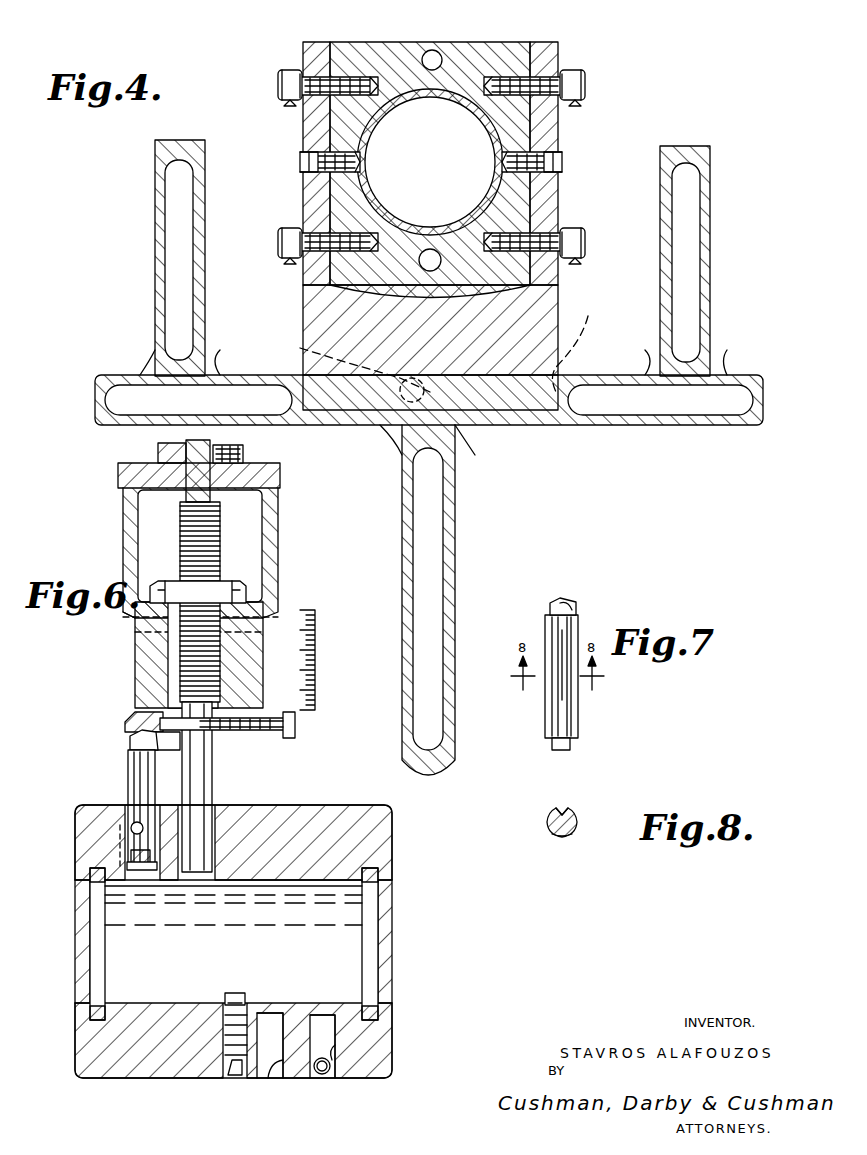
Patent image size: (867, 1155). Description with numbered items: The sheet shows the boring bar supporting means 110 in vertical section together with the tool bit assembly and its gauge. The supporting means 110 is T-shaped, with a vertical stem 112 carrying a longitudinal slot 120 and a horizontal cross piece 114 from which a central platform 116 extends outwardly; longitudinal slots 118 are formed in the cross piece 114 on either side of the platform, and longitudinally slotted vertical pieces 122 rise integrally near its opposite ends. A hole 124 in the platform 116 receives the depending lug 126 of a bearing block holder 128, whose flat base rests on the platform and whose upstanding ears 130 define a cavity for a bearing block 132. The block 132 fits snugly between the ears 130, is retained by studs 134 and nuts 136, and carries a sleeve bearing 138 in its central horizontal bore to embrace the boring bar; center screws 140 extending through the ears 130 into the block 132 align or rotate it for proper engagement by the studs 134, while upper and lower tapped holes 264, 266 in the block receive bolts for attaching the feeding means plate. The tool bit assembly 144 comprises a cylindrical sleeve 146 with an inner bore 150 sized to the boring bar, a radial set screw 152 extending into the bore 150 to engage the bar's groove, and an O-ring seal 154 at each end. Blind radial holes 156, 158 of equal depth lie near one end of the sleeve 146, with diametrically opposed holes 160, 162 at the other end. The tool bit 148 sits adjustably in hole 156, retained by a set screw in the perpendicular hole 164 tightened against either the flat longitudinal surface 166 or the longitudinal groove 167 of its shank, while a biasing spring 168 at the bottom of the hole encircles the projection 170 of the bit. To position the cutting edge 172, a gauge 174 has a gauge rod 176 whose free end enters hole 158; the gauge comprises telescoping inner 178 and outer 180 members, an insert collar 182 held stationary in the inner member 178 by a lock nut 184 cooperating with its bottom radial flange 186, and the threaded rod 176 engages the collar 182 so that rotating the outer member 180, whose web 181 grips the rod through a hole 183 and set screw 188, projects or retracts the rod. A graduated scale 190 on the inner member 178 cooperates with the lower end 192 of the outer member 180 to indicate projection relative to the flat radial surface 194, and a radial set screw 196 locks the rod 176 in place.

In FIG. 4, the supporting means 110 is at (515, 459).
In FIG. 4, the vertical stem 112 is at (455, 641).
In FIG. 4, the cross piece 114 is at (282, 426).
In FIG. 4, the central platform 116 is at (550, 392).
In FIG. 4, the longitudinal slots 118 is at (112, 388).
In FIG. 4, the longitudinal slot 120 is at (442, 586).
In FIG. 4, the longitudinally slotted vertical pieces 122 is at (158, 242).
In FIG. 4, the hole 124 is at (300, 348).
In FIG. 4, the depending lug 126 is at (501, 347).
In FIG. 4, the bearing block holder 128 is at (303, 305).
In FIG. 4, the upstanding ears 130 is at (305, 122).
In FIG. 4, the bearing block 132 is at (320, 44).
In FIG. 4, the studs 134 is at (300, 80).
In FIG. 4, the nuts 136 is at (286, 104).
In FIG. 4, the sleeve bearing 138 is at (370, 113).
In FIG. 4, the center screws 140 is at (312, 160).
In FIG. 6, the tool bit assembly 144 is at (290, 808).
In FIG. 6, the sleeve 146 is at (390, 850).
In FIG. 6, the tool bit 148 is at (130, 778).
In FIG. 7, the tool bit 148 is at (578, 704).
In FIG. 8, the tool bit 148 is at (574, 812).
In FIG. 6, the inner bore 150 is at (298, 884).
In FIG. 6, the radial set screw 152 is at (246, 997).
In FIG. 6, the O-ring seal 154 is at (95, 882).
In FIG. 6, the blind radial hole 156 is at (130, 816).
In FIG. 6, the blind radial hole 158 is at (205, 878).
In FIG. 6, the hole 160 is at (335, 1052).
In FIG. 6, the hole 162 is at (268, 1080).
In FIG. 6, the hole 164 is at (150, 875).
In FIG. 8, the flat longitudinal surface 166 is at (566, 837).
In FIG. 8, the longitudinal groove 167 is at (560, 810).
In FIG. 6, the biasing spring 168 is at (130, 875).
In FIG. 6, the projection 170 is at (143, 872).
In FIG. 7, the projection 170 is at (570, 748).
In FIG. 6, the cutting edge 172 is at (130, 738).
In FIG. 7, the cutting edge 172 is at (578, 608).
In FIG. 6, the gauge 174 is at (122, 548).
In FIG. 6, the gauge rod 176 is at (215, 530).
In FIG. 6, the inner member 178 is at (245, 665).
In FIG. 6, the outer member 180 is at (262, 582).
In FIG. 6, the web 181 is at (157, 462).
In FIG. 6, the insert collar 182 is at (176, 672).
In FIG. 6, the hole 183 is at (192, 488).
In FIG. 6, the lock nut 184 is at (240, 598).
In FIG. 6, the bottom radial flange 186 is at (165, 737).
In FIG. 6, the set screw 188 is at (246, 460).
In FIG. 6, the graduated scale 190 is at (348, 645).
In FIG. 6, the lower end 192 is at (135, 628).
In FIG. 6, the flat radial surface 194 is at (135, 730).
In FIG. 6, the radial set screw 196 is at (288, 727).
In FIG. 4, the upper tapped hole 264 is at (432, 50).
In FIG. 4, the lower tapped hole 266 is at (432, 249).